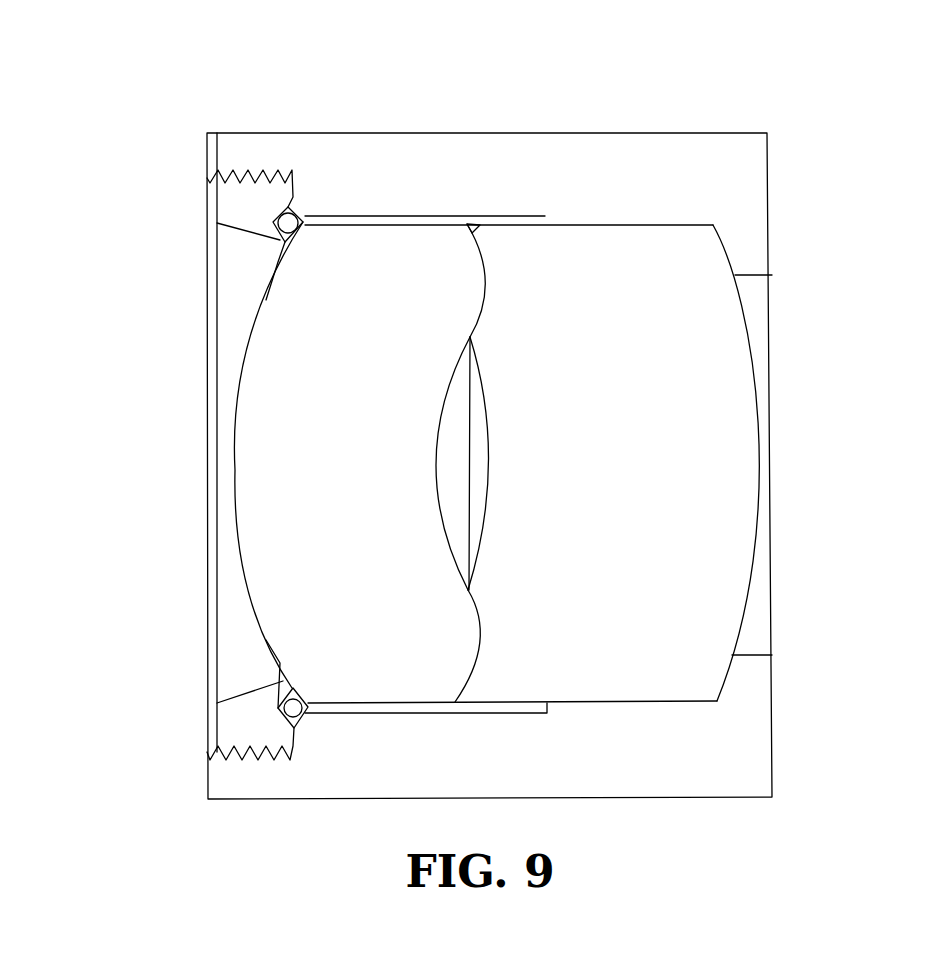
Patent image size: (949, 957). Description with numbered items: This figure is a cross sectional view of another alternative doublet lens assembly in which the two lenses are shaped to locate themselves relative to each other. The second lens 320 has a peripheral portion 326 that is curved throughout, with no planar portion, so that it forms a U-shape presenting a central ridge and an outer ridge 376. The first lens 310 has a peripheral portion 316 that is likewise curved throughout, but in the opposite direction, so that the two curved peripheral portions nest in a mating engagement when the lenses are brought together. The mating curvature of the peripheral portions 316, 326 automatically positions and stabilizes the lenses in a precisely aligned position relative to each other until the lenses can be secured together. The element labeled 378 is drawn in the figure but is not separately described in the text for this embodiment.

The first lens 310 is at (288, 463).
The peripheral portion of the first lens 316 is at (477, 253).
The second lens 320 is at (698, 562).
The peripheral portion of the second lens 326 is at (478, 272).
The outer ridge 376 is at (470, 337).
The spacer 378 is at (472, 233).